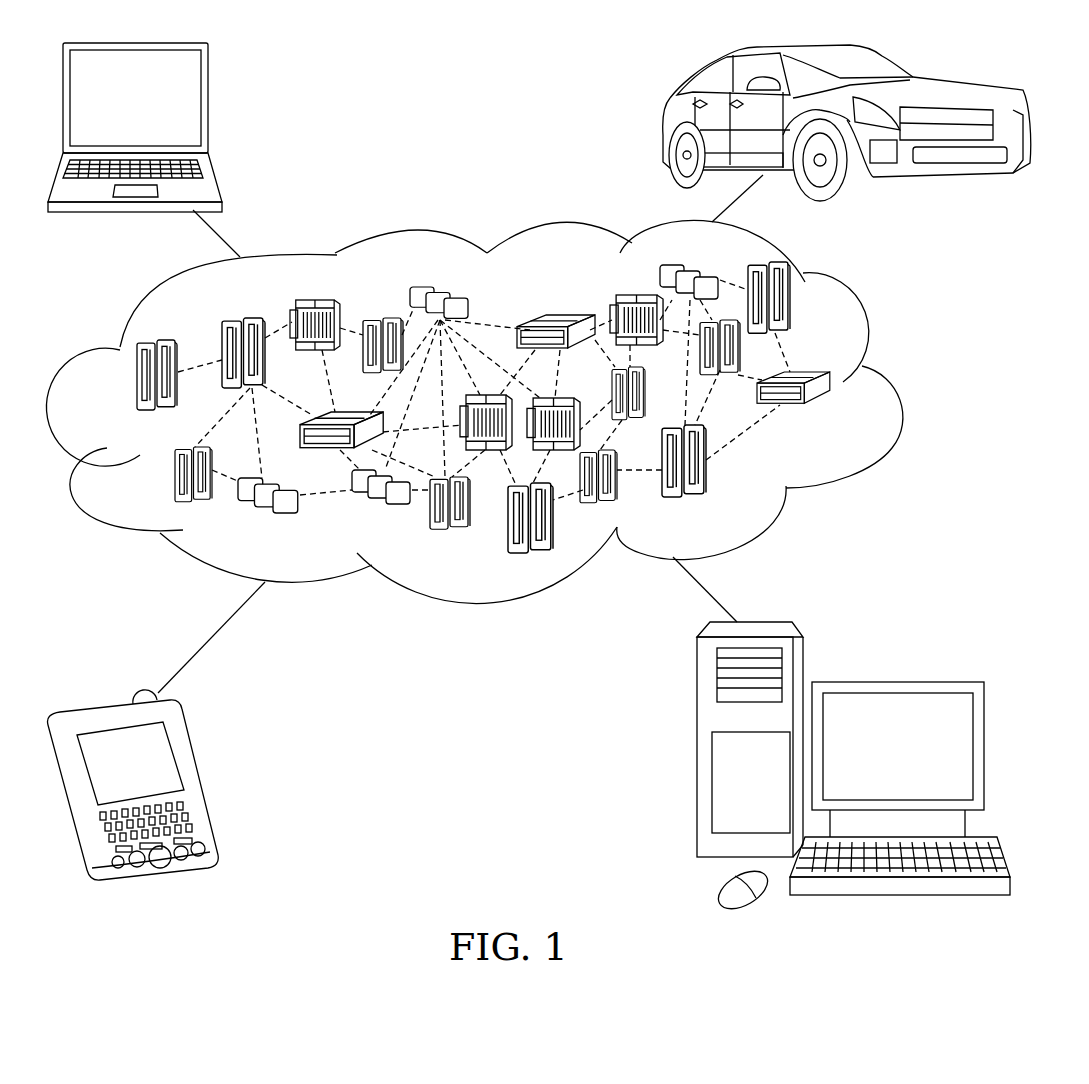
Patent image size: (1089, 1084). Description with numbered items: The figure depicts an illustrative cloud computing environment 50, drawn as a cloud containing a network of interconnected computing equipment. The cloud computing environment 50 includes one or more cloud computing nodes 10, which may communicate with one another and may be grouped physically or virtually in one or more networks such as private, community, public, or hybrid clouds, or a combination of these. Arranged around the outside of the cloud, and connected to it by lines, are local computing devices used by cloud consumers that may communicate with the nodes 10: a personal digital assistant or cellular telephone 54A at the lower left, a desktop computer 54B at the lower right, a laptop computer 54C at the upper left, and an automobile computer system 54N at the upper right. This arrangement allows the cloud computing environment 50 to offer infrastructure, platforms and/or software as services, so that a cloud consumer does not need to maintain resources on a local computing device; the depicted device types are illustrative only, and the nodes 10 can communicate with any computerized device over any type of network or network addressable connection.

The cloud computing node 10 is at (845, 424).
The cloud computing environment 50 is at (500, 411).
The personal digital assistant or cellular telephone 54A is at (195, 778).
The desktop computer 54B is at (893, 680).
The laptop computer 54C is at (208, 108).
The automobile computer system 54N is at (665, 125).